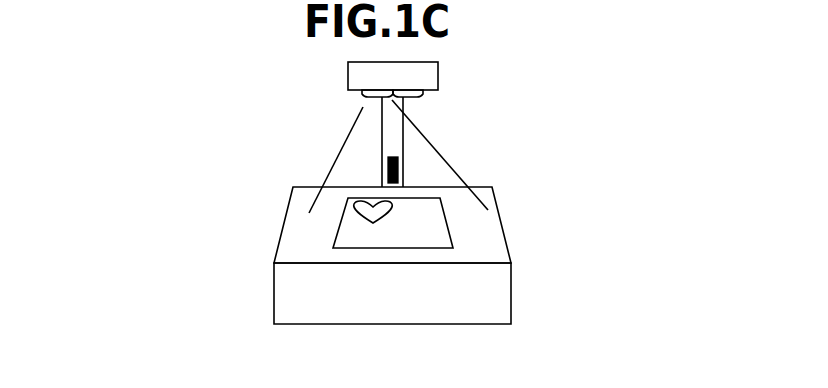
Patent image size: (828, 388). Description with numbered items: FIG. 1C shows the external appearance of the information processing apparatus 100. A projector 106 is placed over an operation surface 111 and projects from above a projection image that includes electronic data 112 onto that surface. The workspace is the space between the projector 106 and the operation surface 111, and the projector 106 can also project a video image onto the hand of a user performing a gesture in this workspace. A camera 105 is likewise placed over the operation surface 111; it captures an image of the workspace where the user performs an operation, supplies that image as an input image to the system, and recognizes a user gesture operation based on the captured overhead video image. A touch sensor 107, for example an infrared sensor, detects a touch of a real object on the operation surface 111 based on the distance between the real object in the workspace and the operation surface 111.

The information processing apparatus 100 is at (511, 283).
The camera 105 is at (422, 96).
The projector 106 is at (364, 101).
The touch sensor 107 is at (388, 173).
The operation surface 111 is at (492, 225).
The electronic data 112 is at (350, 232).